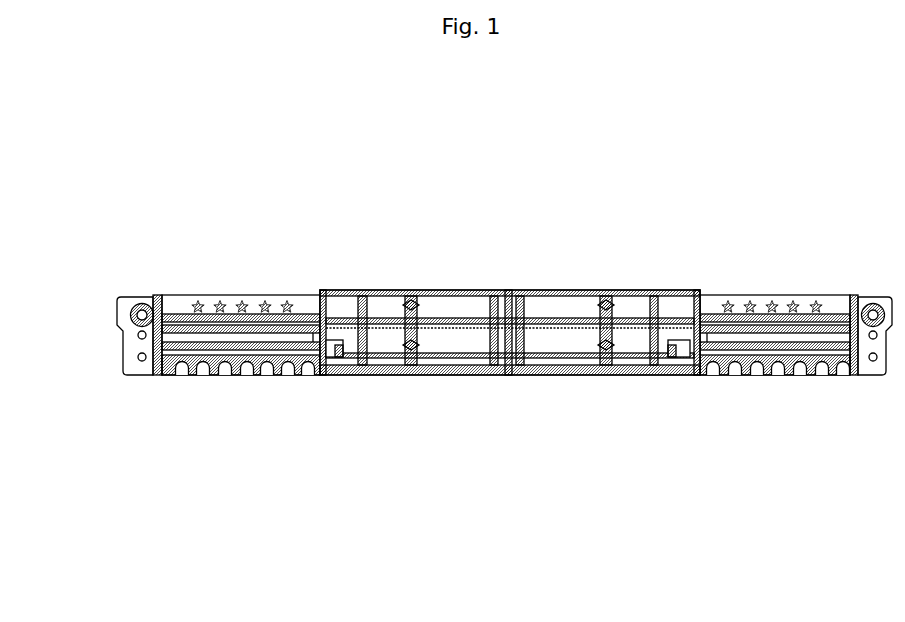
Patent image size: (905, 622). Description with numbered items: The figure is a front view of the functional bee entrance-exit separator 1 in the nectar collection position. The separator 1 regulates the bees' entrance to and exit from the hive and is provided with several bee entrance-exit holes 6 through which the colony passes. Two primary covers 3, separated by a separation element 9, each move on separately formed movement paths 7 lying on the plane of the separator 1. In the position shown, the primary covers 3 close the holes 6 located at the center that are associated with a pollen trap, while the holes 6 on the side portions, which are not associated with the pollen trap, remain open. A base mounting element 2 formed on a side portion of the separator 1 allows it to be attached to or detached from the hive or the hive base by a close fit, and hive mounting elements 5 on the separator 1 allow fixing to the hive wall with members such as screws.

The separator 1 is at (738, 293).
The base mounting element 2 is at (132, 343).
The primary cover 3 is at (462, 307).
The hive mounting element 5 is at (143, 303).
The bee entrance-exit hole 6 is at (243, 367).
The movement path 7 is at (813, 327).
The separation element 9 is at (505, 375).